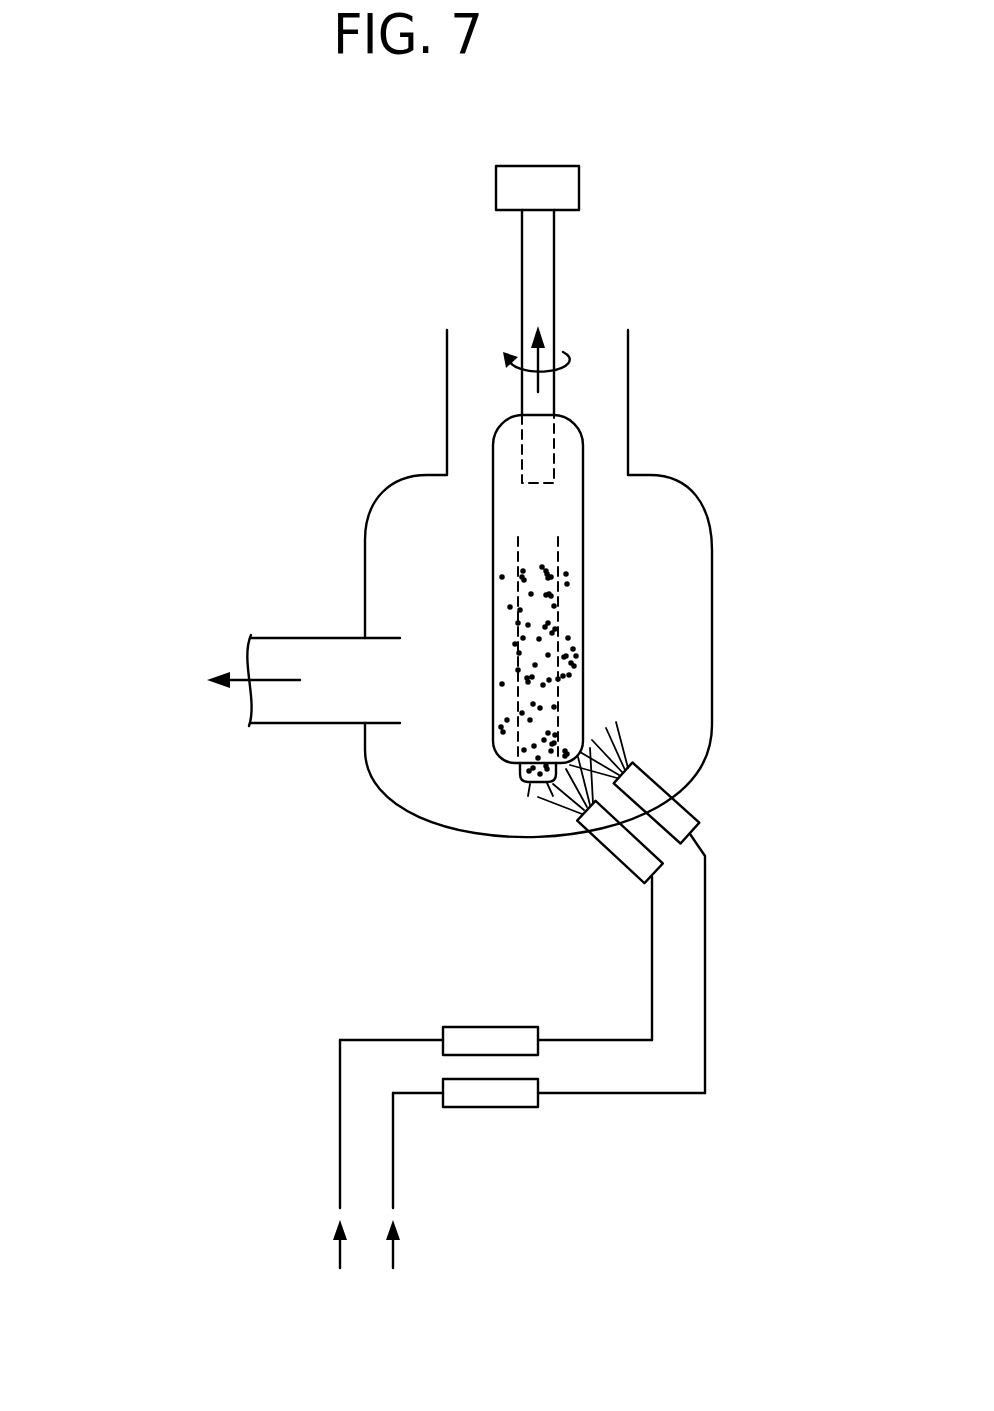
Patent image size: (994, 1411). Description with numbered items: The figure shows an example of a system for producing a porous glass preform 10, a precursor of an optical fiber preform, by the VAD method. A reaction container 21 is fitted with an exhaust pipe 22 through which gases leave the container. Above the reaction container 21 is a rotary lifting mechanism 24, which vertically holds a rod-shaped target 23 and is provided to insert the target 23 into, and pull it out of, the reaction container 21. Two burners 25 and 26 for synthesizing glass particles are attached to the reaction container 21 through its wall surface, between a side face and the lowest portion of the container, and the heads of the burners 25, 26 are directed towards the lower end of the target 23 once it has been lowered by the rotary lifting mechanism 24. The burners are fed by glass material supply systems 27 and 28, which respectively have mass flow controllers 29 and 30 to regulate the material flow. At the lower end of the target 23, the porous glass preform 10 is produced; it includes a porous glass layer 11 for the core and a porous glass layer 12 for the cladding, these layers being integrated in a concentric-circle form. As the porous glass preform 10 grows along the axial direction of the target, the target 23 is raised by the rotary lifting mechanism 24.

The porous glass preform 10 is at (585, 547).
The porous glass layer for the core 11 is at (527, 784).
The porous glass layer for the cladding 12 is at (500, 760).
The reaction container 21 is at (365, 505).
The exhaust pipe 22 is at (297, 638).
The target 23 is at (530, 280).
The rotary lifting mechanism 24 is at (496, 186).
The burner 25 is at (605, 850).
The burner 26 is at (688, 812).
The glass material supply system 27 is at (325, 1087).
The glass material supply system 28 is at (378, 1133).
The mass flow controller 29 is at (480, 1027).
The mass flow controller 30 is at (500, 1107).